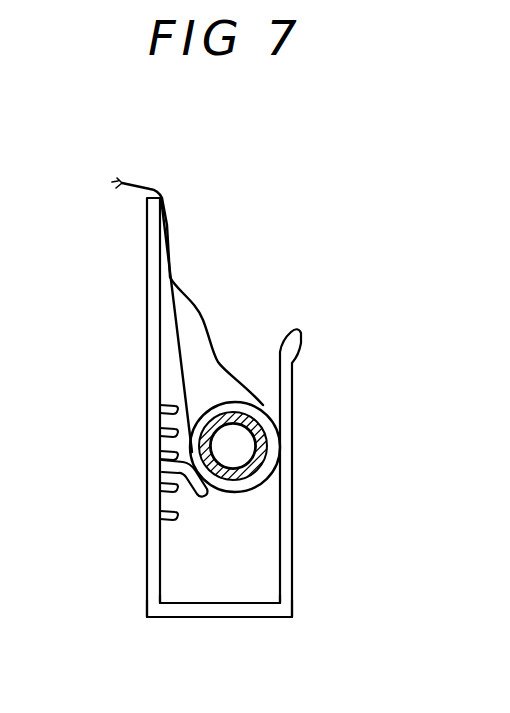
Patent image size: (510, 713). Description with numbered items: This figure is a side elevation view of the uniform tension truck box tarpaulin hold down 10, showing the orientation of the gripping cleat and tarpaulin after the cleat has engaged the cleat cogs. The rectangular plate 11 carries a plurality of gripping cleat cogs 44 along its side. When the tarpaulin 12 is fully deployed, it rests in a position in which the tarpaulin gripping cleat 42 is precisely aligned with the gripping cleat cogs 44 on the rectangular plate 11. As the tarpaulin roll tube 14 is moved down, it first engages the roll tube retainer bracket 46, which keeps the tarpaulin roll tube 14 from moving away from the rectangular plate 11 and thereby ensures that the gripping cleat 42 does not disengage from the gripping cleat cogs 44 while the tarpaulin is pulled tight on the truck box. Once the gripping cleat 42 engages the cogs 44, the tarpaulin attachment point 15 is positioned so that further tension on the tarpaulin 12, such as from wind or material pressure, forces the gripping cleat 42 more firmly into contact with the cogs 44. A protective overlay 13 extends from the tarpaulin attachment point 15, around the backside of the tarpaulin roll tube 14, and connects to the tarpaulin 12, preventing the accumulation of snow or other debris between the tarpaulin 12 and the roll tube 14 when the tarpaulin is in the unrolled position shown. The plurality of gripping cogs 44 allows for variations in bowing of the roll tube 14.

The uniform tension truck box tarpaulin hold down 10 is at (138, 255).
The rectangular plate 11 is at (150, 320).
The tarpaulin 12 is at (185, 367).
The protective overlay 13 is at (215, 317).
The tarpaulin roll tube 14 is at (270, 457).
The tarpaulin attachment point 15 is at (208, 440).
The tarpaulin gripping cleat 42 is at (205, 500).
The gripping cleat cogs 44 is at (148, 507).
The roll tube retainer bracket 46 is at (297, 535).